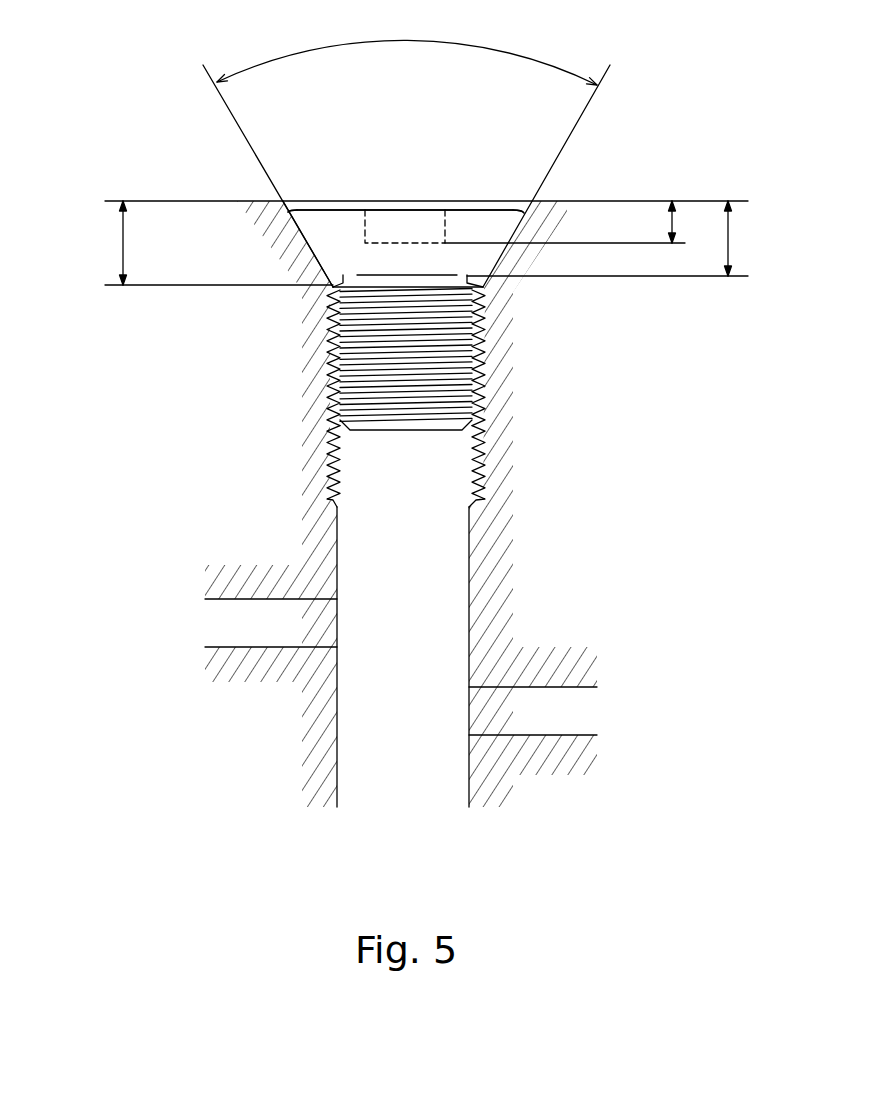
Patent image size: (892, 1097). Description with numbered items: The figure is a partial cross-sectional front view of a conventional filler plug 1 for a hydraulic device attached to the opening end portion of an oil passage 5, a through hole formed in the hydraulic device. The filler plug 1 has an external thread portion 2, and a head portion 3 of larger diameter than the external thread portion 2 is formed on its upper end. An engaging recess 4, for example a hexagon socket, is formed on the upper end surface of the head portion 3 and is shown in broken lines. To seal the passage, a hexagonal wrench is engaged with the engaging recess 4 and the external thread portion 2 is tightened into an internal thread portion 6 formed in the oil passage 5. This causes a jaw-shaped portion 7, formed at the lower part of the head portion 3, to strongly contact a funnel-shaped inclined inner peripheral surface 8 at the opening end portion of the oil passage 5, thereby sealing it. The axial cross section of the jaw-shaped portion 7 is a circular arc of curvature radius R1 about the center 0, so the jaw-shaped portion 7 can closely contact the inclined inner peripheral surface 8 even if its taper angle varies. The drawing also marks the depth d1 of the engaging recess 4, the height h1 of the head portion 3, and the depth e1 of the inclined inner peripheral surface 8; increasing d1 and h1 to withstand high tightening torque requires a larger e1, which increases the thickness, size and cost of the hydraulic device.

The center 0 is at (312, 245).
The filler plug 1 is at (486, 197).
The external thread portion 2 is at (443, 328).
The head portion 3 is at (331, 203).
The engaging recess 4 is at (434, 232).
The oil passage 5 is at (468, 552).
The internal thread portion 6 is at (477, 436).
The jaw-shaped portion 7 is at (340, 258).
The funnel-shaped inclined inner peripheral surface 8 is at (517, 227).
The curvature radius R1 is at (332, 223).
The depth of the inclined inner peripheral surface e1 is at (111, 243).
The depth of the engaging recess d1 is at (688, 222).
The height of the head portion h1 is at (745, 238).